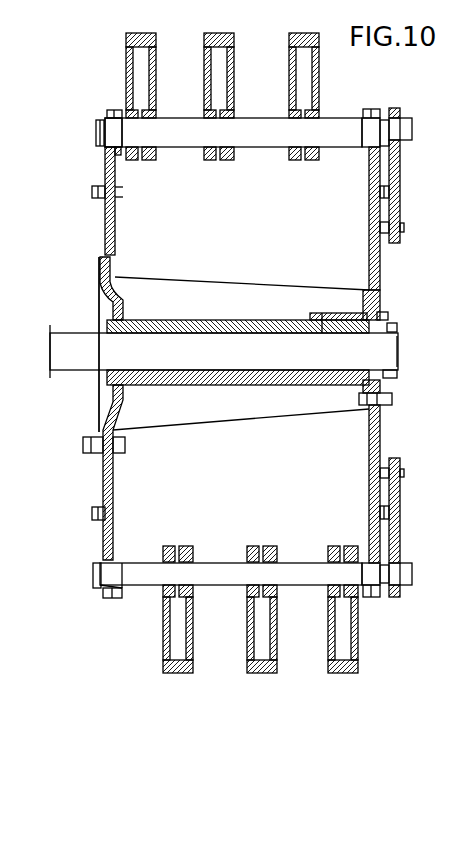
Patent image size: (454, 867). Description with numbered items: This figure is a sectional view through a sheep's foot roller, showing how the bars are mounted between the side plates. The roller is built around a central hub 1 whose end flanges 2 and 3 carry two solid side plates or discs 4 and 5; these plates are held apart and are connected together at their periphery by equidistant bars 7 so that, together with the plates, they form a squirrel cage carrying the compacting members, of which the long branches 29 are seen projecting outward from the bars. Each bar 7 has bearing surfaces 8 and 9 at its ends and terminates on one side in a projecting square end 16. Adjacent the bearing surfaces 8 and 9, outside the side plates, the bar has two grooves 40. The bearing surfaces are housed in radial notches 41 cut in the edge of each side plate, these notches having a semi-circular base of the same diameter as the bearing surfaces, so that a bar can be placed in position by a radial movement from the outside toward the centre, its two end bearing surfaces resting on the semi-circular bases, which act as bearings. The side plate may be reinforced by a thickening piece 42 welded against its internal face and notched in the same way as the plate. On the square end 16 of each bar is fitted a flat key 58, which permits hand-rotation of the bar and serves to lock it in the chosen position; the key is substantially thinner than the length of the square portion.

The hub 1 is at (240, 322).
The end flange 2 is at (199, 351).
The end flange 3 is at (49, 324).
The side plate 4 is at (108, 222).
The side plate 5 is at (380, 263).
The bar 7 is at (340, 132).
The bearing surface 8 is at (118, 132).
The bearing surface 9 is at (401, 148).
The projecting square end 16 is at (404, 127).
The long branch 29 is at (127, 72).
The groove 40 is at (97, 132).
The radial notch 41 is at (100, 110).
The thickening piece 42 is at (118, 152).
The flat key 58 is at (402, 195).